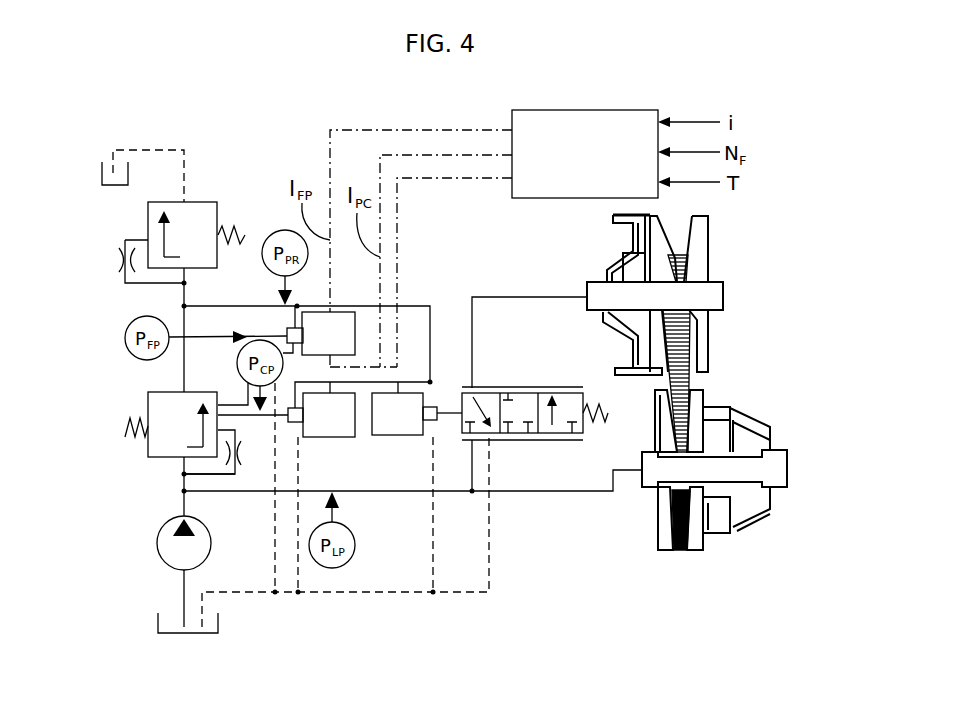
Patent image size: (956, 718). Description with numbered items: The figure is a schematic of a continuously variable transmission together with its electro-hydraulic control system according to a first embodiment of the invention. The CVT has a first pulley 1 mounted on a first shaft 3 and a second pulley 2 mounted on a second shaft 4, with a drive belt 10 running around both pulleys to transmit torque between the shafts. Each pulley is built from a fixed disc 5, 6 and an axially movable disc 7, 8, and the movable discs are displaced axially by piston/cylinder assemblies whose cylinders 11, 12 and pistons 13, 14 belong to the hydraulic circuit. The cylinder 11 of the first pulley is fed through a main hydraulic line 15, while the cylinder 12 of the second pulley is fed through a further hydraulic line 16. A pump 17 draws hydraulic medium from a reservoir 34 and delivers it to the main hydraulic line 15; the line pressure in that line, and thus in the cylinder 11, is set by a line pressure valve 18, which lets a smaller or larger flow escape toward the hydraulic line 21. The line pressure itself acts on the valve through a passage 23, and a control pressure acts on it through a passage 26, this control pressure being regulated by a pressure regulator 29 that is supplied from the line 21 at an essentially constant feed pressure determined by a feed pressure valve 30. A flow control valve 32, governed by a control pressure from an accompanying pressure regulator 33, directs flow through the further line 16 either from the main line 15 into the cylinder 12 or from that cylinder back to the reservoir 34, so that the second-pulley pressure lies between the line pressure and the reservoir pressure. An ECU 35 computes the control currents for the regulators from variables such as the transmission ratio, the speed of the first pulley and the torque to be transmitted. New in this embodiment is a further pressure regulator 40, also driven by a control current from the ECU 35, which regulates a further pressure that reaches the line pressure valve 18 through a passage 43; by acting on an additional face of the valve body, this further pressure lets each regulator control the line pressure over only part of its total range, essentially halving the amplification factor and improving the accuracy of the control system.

The first pulley 1 is at (697, 392).
The second pulley 2 is at (677, 288).
The first shaft 3 is at (728, 488).
The second shaft 4 is at (725, 297).
The fixed disc 5 is at (662, 507).
The fixed disc 6 is at (700, 327).
The axially moveable disc 7 is at (697, 538).
The axially moveable disc 8 is at (662, 248).
The drive belt 10 is at (688, 378).
The cylinder 11 is at (713, 513).
The cylinder 12 is at (631, 251).
The piston 13 is at (770, 437).
The piston 14 is at (607, 330).
The main hydraulic line 15 is at (453, 493).
The further hydraulic line 16 is at (528, 297).
The pump 17 is at (158, 540).
The line pressure valve 18 is at (128, 377).
The hydraulic line 21 is at (192, 306).
The passage 23 is at (198, 474).
The passage 26 is at (240, 418).
The pressure regulator 29 is at (350, 437).
The feed pressure valve 30 is at (227, 182).
The flow control valve 32 is at (473, 388).
The pressure regulator 33 is at (383, 437).
The reservoir 34 is at (102, 176).
The ECU 35 is at (530, 110).
The further pressure regulator 40 is at (357, 330).
The passage 43 is at (248, 383).